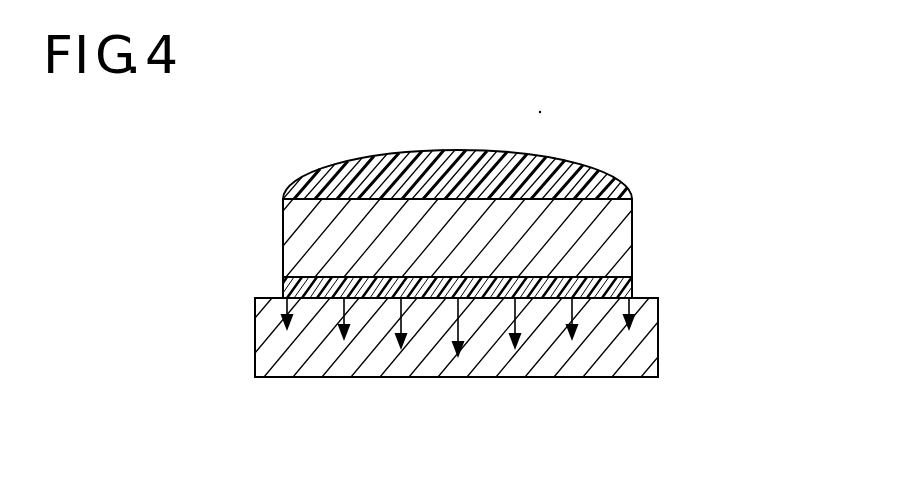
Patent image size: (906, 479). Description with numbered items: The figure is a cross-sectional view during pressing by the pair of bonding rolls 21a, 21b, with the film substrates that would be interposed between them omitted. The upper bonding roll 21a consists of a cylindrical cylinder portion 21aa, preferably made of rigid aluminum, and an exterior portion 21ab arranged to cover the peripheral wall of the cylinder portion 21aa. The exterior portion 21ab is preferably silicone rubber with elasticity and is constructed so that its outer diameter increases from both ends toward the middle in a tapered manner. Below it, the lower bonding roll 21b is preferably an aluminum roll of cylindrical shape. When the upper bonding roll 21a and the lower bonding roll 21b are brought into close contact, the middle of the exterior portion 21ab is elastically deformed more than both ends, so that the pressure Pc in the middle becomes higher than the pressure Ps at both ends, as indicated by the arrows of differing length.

The upper bonding roll 21a is at (557, 224).
The cylinder portion 21aa is at (608, 232).
The exterior portion 21ab is at (618, 180).
The lower bonding roll 21b is at (650, 343).
The pressure in the middle Pc is at (455, 312).
The pressure at both ends Ps is at (628, 312).